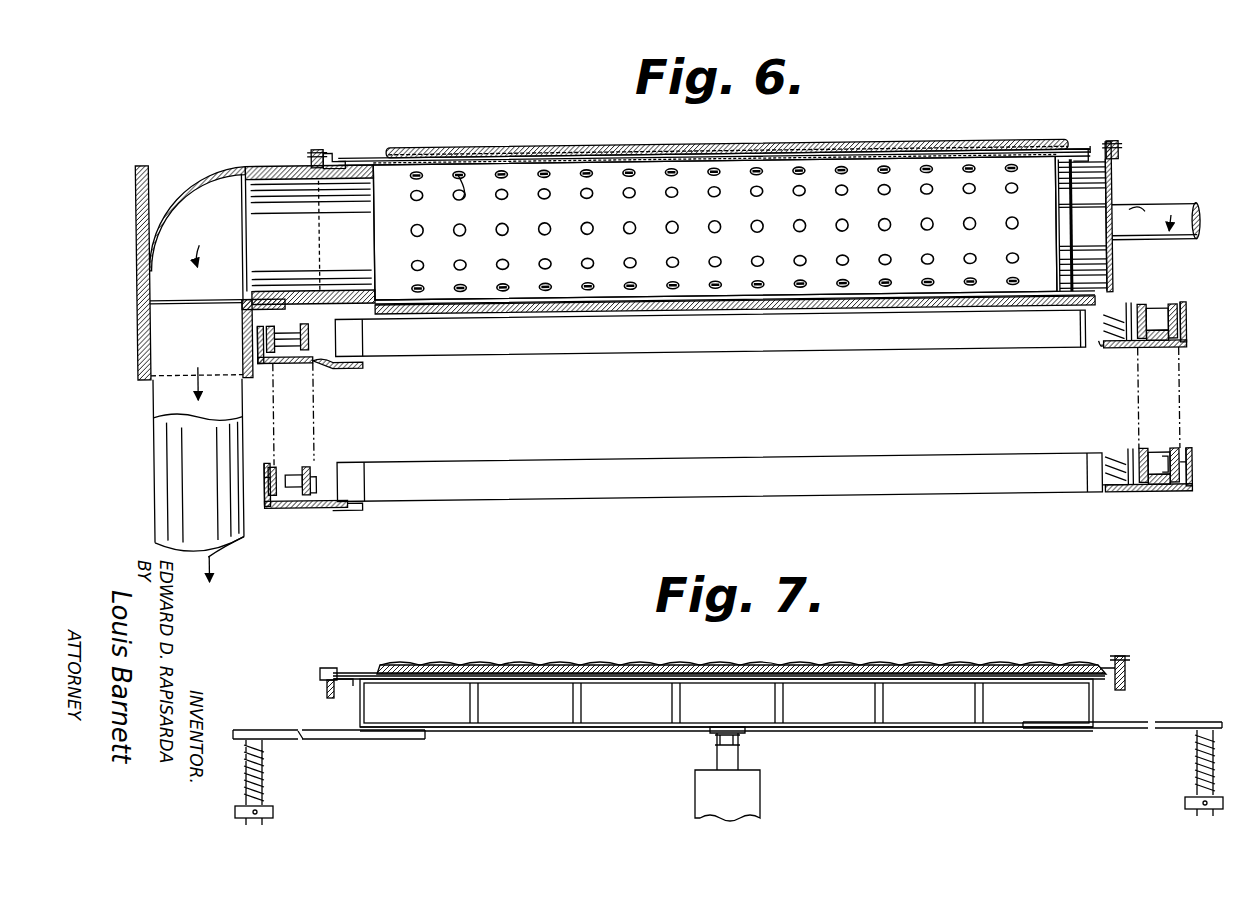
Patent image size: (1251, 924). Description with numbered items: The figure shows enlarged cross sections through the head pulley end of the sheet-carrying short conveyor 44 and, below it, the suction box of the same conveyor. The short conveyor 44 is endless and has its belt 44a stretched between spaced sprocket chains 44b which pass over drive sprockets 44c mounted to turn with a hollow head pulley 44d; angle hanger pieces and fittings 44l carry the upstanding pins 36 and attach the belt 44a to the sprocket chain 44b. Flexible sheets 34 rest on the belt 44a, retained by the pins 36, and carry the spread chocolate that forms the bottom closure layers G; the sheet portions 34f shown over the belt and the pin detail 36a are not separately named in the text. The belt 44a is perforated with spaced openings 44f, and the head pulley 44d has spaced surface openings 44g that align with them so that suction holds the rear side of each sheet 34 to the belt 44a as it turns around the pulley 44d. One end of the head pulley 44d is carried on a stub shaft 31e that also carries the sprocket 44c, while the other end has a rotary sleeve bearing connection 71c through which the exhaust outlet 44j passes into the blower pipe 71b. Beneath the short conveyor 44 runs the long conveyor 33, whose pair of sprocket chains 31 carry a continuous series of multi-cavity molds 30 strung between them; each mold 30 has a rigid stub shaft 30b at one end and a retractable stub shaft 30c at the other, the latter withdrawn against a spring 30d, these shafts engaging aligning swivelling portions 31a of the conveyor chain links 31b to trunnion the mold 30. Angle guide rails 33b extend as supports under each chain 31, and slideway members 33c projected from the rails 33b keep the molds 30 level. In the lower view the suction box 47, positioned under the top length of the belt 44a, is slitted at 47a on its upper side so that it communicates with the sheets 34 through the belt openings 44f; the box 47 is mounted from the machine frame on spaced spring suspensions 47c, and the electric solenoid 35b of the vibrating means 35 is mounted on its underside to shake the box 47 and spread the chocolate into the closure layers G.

In FIG. 6, the multi-cavity mold 30 is at (520, 354).
In FIG. 6, the stub shaft 30b is at (332, 488).
In FIG. 6, the stub shaft 30c is at (1128, 466).
In FIG. 6, the spring 30d is at (1122, 498).
In FIG. 6, the sprocket chain 31 is at (301, 300).
In FIG. 6, the swivelling portion 31a is at (292, 484).
In FIG. 6, the conveyor chain link 31b is at (262, 476).
In FIG. 6, the stub shaft 31e is at (1127, 225).
In FIG. 6, the long conveyor 33 is at (282, 364).
In FIG. 6, the guide rail 33b is at (1186, 330).
In FIG. 6, the slideway member 33c is at (325, 362).
In FIG. 6, the flexible sheet 34 is at (392, 153).
In FIG. 7, the flexible sheet 34 is at (395, 668).
In FIG. 7, the cover plate segments 34f is at (548, 667).
In FIG. 7, the vibrating means 35 is at (688, 772).
In FIG. 7, the electric solenoid 35b is at (750, 800).
In FIG. 6, the pin 36 is at (366, 157).
In FIG. 7, the pin 36 is at (375, 672).
In FIG. 6, the screen end 36a is at (1065, 152).
In FIG. 6, the short conveyor 44 is at (388, 305).
In FIG. 6, the conveyor belt 44a is at (538, 156).
In FIG. 7, the conveyor belt 44a is at (618, 668).
In FIG. 7, the sprocket chain 44b is at (330, 665).
In FIG. 6, the drive sprocket 44c is at (318, 149).
In FIG. 6, the hollow head pulley 44d is at (1025, 185).
In FIG. 6, the belt opening 44f is at (470, 175).
In FIG. 6, the pulley surface opening 44g is at (593, 267).
In FIG. 6, the exhaust outlet 44j is at (238, 195).
In FIG. 6, the angle hanger piece and fittings 44l is at (340, 158).
In FIG. 7, the suction box 47 is at (600, 710).
In FIG. 7, the slit 47a is at (488, 695).
In FIG. 7, the spring suspension 47c is at (264, 795).
In FIG. 6, the pipe 71b is at (170, 455).
In FIG. 6, the rotary sleeve bearing connection 71c is at (298, 165).
In FIG. 6, the bottom closure layer G is at (857, 150).
In FIG. 7, the bottom closure layer G is at (847, 662).